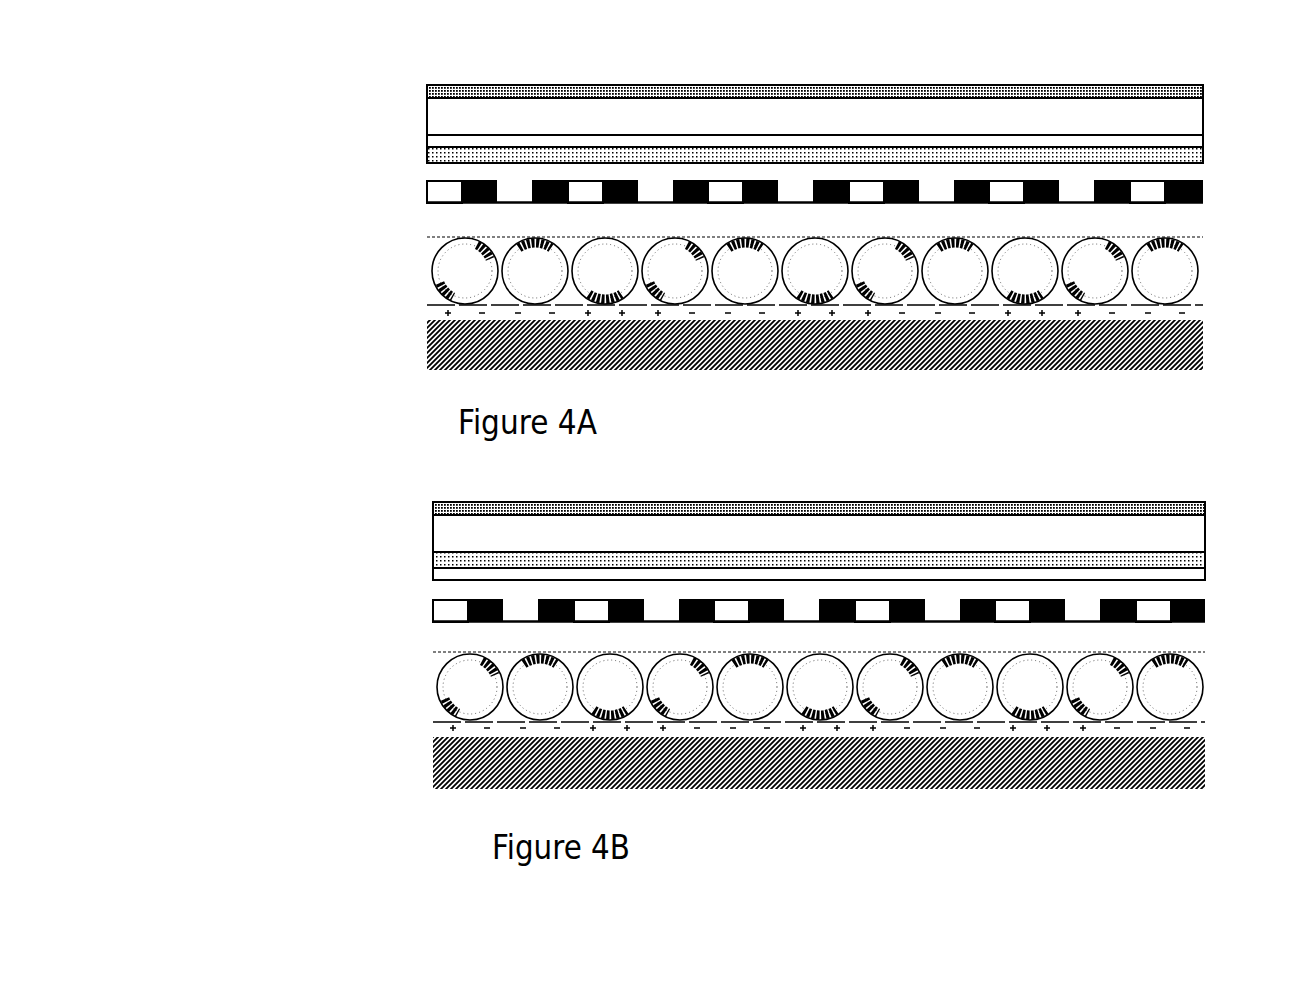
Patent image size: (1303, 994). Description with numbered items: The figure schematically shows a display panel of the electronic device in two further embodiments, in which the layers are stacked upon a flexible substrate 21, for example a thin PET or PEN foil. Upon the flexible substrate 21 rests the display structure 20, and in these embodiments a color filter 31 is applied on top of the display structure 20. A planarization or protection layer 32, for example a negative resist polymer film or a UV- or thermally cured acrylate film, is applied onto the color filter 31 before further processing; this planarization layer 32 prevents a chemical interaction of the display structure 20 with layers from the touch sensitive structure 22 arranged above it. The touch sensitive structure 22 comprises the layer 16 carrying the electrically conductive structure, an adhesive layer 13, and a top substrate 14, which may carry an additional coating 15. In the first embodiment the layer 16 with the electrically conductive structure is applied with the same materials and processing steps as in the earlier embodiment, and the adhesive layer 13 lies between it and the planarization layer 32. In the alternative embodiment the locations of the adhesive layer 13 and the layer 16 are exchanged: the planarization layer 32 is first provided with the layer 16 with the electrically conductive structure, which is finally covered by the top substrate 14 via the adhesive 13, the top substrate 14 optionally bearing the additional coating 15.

In FIG. 4A, the adhesive layer 13 is at (425, 161).
In FIG. 4B, the adhesive layer 13 is at (431, 556).
In FIG. 4A, the top substrate 14 is at (822, 105).
In FIG. 4B, the top substrate 14 is at (793, 532).
In FIG. 4A, the additional coating 15 is at (1035, 80).
In FIG. 4B, the additional coating 15 is at (1040, 500).
In FIG. 4A, the layer with the electrically conductive structure 16 is at (425, 139).
In FIG. 4B, the layer with the electrically conductive structure 16 is at (431, 576).
In FIG. 4A, the display structure 20 is at (1210, 165).
In FIG. 4B, the display structure 20 is at (1210, 587).
In FIG. 4A, the flexible substrate 21 is at (420, 345).
In FIG. 4B, the flexible substrate 21 is at (427, 762).
In FIG. 4A, the touch sensitive structure 22 is at (1210, 85).
In FIG. 4B, the touch sensitive structure 22 is at (1210, 502).
In FIG. 4A, the color filter 31 is at (425, 190).
In FIG. 4B, the color filter 31 is at (431, 607).
In FIG. 4A, the planarization layer 32 is at (425, 175).
In FIG. 4B, the planarization layer 32 is at (431, 592).